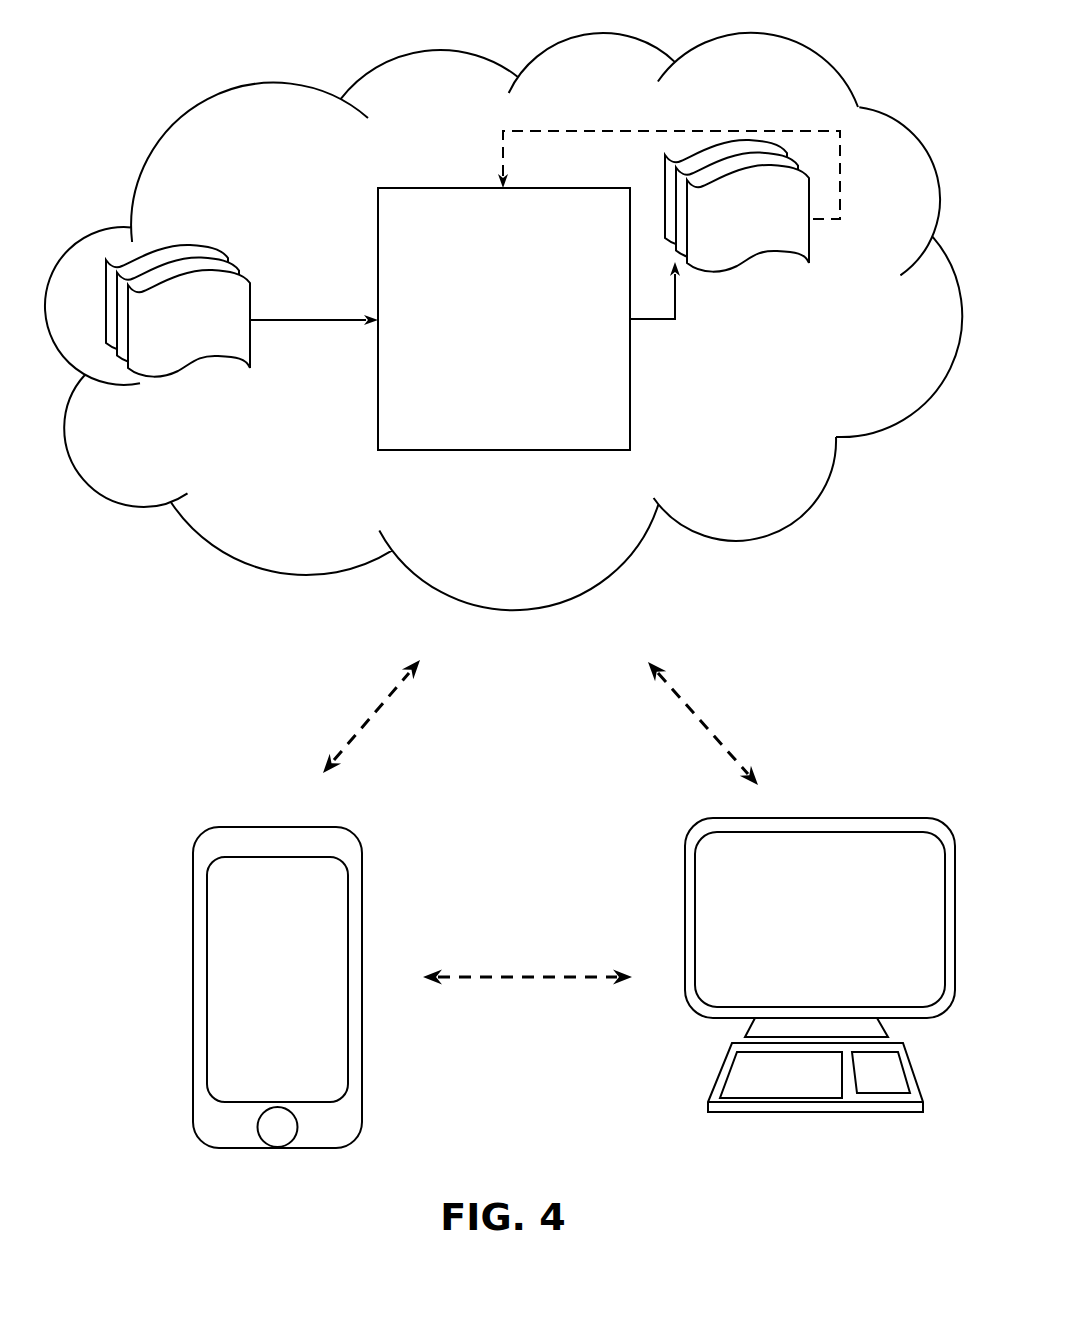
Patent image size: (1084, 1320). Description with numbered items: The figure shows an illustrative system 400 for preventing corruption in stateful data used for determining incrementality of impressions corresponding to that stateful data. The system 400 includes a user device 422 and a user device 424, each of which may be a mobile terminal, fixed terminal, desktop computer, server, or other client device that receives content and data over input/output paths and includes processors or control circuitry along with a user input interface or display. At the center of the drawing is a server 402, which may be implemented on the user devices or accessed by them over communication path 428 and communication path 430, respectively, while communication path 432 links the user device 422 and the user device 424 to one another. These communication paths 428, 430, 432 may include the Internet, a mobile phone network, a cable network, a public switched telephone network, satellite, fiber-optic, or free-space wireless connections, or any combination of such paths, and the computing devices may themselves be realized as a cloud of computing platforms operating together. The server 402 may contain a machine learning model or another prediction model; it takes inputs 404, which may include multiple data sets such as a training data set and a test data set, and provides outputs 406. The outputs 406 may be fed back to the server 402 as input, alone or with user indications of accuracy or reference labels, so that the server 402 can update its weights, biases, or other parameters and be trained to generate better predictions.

The system 400 is at (484, 26).
The server 402 is at (488, 332).
The inputs 404 is at (197, 250).
The outputs 406 is at (786, 254).
The user device 422 is at (265, 794).
The user device 424 is at (815, 800).
The communication path 428 is at (340, 680).
The communication path 430 is at (715, 668).
The communication path 432 is at (520, 937).